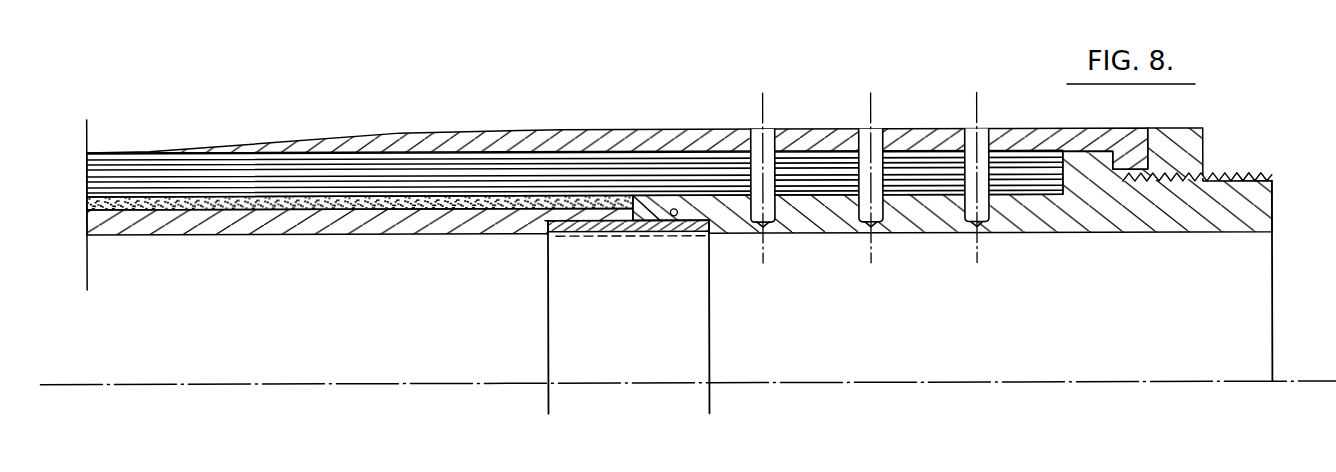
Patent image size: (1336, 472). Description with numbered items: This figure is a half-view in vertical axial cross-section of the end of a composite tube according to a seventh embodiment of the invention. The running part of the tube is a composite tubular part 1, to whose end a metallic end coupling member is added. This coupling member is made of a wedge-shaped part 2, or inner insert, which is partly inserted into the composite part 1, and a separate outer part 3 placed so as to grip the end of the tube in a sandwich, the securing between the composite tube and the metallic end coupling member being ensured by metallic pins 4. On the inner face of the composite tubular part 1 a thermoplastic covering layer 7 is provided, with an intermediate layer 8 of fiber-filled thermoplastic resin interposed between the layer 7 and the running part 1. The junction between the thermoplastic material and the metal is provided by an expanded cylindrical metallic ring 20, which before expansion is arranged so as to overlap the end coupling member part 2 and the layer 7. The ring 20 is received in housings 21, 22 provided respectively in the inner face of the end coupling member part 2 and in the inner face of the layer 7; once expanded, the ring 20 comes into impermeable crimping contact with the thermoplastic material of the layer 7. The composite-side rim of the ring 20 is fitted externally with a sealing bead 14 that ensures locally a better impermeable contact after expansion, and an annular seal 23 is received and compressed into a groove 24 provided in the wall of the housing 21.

The composite tubular part 1 is at (407, 172).
The wedge-shaped part 2 is at (931, 218).
The outer part 3 is at (568, 146).
The metallic pins 4 is at (976, 150).
The covering layer 7 is at (304, 223).
The intermediate layer 8 is at (347, 200).
The sealing bead 14 is at (553, 222).
The expanded cylindrical metallic ring 20 is at (547, 294).
The housing 21 is at (652, 230).
The housing 22 is at (585, 233).
The annular seal 23 is at (677, 211).
The groove 24 is at (668, 208).